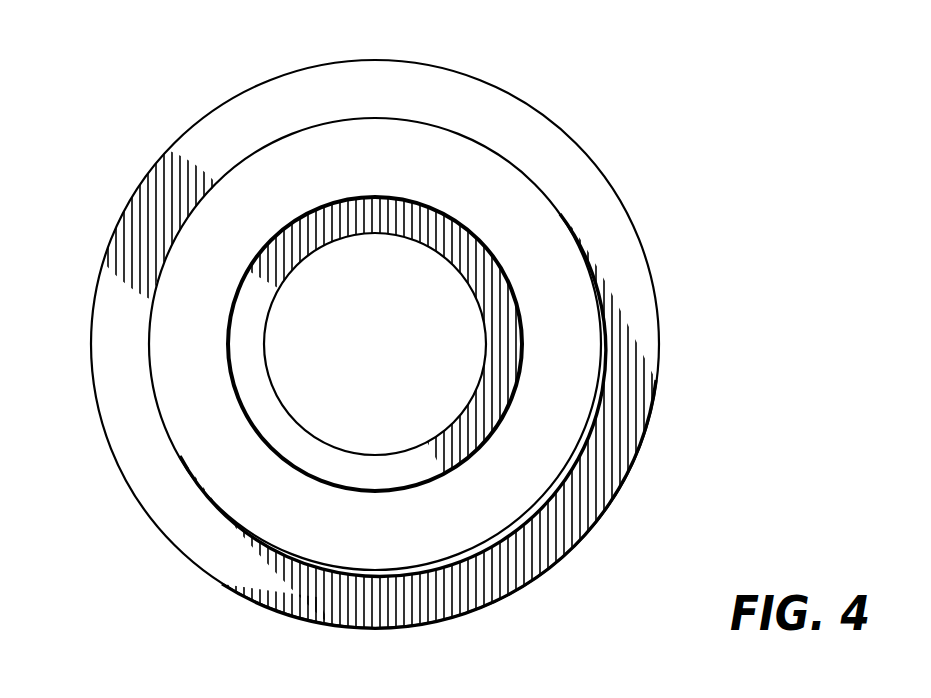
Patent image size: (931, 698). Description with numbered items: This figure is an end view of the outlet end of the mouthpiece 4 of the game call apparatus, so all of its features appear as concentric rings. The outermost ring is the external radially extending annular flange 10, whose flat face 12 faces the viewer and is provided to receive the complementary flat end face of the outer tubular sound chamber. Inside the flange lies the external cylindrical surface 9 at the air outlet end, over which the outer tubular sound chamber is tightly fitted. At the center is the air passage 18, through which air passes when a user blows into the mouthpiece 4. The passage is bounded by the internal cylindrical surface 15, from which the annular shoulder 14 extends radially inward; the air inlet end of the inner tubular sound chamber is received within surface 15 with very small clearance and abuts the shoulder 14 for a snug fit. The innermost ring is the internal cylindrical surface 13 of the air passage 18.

The mouthpiece 4 is at (138, 94).
The external cylindrical surface 9 is at (558, 210).
The external radially extending annular flange 10 is at (563, 131).
The flat face 12 is at (409, 101).
The internal cylindrical surface 13 is at (487, 342).
The annular shoulder 14 is at (392, 470).
The internal cylindrical surface 15 is at (233, 304).
The air passage 18 is at (248, 376).